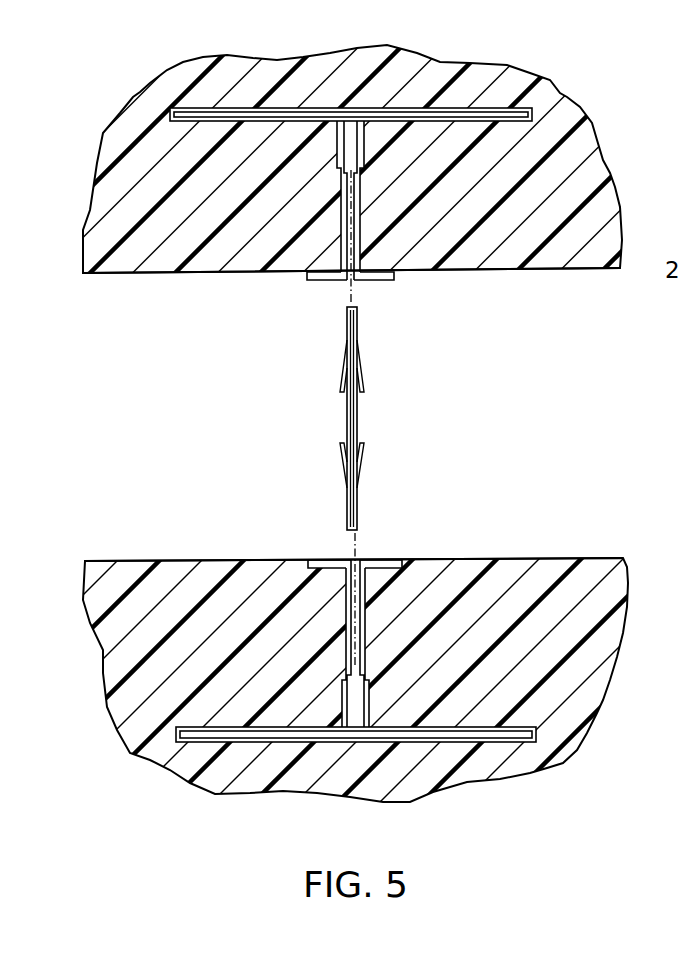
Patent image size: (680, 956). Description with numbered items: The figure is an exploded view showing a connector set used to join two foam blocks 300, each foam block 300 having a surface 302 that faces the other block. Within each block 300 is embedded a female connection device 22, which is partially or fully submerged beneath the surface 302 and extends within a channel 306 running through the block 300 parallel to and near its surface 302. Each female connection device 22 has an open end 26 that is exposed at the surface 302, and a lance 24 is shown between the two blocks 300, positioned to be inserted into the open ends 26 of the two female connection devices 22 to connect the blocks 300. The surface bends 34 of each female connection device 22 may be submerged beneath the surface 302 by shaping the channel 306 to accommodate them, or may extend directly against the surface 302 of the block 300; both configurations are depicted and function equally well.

The female connection device 22 is at (340, 623).
The lance 24 is at (358, 413).
The open end 26 is at (362, 560).
The surface bends 34 is at (310, 281).
The foam block 300 is at (592, 120).
The surface 302 is at (547, 270).
The channel 306 is at (538, 735).